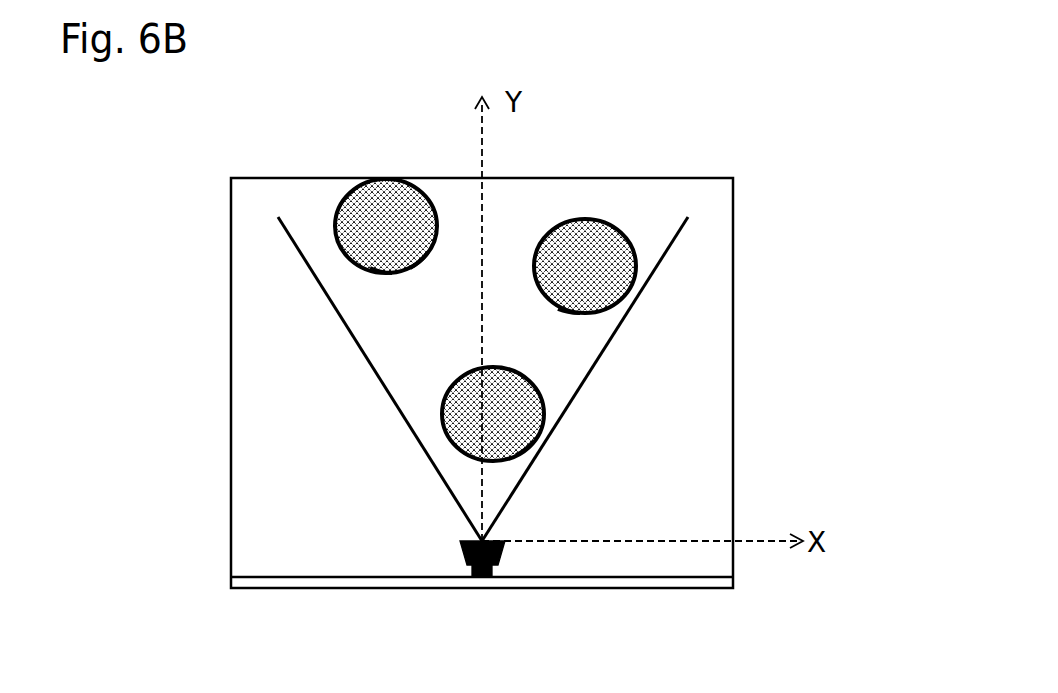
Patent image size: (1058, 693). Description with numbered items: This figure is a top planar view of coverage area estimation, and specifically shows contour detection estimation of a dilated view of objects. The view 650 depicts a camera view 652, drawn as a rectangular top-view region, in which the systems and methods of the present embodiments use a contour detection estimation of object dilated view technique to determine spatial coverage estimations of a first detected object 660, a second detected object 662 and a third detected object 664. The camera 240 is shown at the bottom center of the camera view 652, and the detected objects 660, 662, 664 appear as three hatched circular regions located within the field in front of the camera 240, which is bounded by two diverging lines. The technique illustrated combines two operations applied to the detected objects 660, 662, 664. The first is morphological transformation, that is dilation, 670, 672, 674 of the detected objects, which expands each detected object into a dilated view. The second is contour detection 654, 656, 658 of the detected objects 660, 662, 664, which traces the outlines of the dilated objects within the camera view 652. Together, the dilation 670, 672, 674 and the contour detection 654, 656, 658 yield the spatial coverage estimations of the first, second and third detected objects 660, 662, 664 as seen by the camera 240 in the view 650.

The camera 240 is at (500, 563).
The view 650 is at (723, 675).
The camera view 652 is at (297, 523).
The contour detection 654 is at (452, 445).
The contour detection 656 is at (623, 298).
The contour detection 658 is at (380, 272).
The first detected object 660 is at (500, 367).
The second detected object 662 is at (587, 220).
The third detected object 664 is at (385, 178).
The morphological transformation (dilation) 670 is at (523, 443).
The morphological transformation (dilation) 672 is at (568, 313).
The morphological transformation (dilation) 674 is at (420, 263).